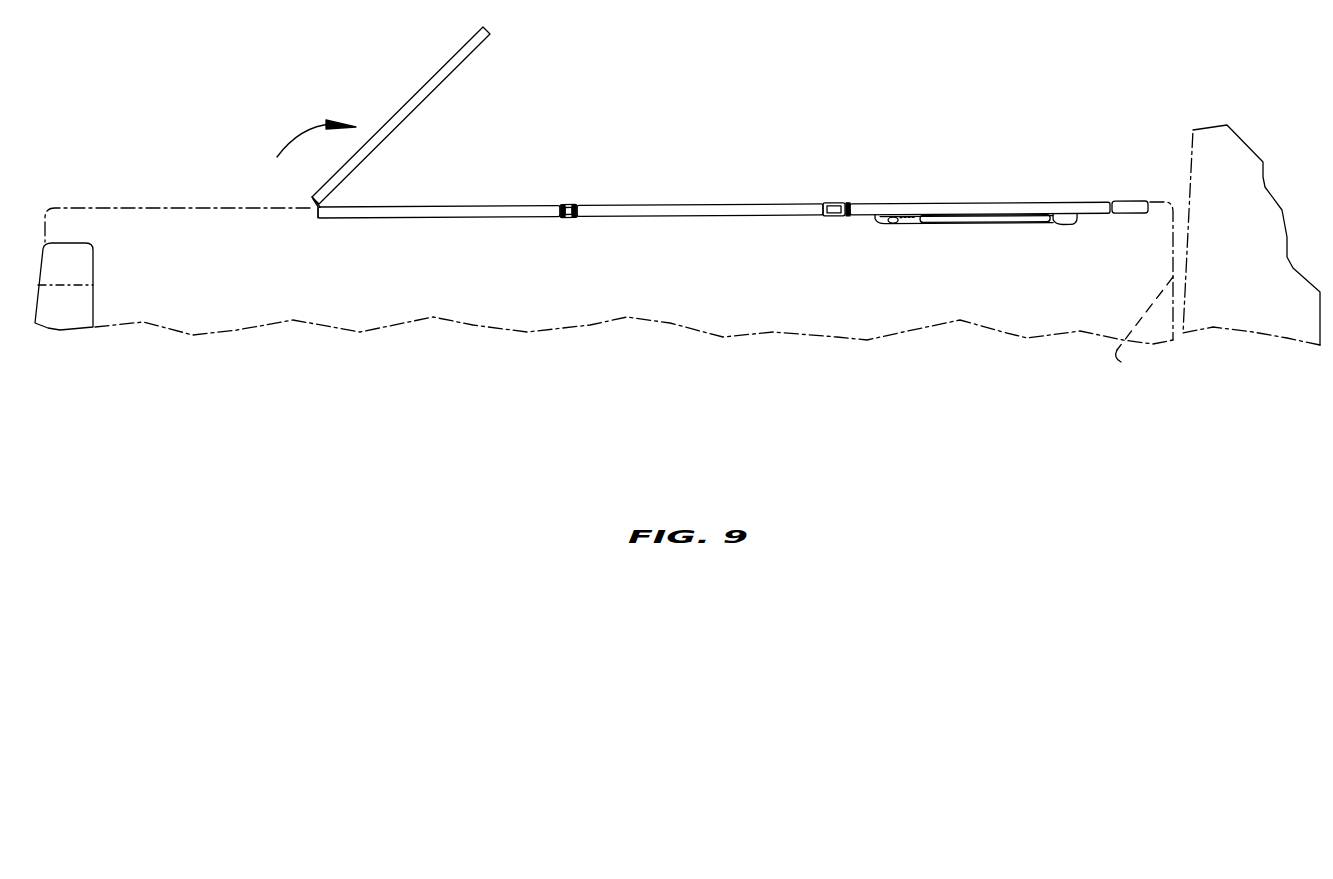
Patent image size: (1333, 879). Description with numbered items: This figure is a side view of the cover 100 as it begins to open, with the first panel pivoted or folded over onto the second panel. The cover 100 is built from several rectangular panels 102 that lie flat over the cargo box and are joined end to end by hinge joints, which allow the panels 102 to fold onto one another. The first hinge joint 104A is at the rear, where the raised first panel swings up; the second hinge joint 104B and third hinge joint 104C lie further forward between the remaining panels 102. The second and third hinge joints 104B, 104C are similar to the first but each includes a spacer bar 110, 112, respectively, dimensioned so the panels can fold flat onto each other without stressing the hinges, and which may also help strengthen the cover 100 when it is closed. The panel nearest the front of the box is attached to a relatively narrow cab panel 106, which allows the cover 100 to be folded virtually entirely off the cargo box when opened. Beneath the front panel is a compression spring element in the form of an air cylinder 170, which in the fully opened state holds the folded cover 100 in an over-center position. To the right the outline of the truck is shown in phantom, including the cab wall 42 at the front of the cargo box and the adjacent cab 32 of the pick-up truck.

The cover 100 is at (752, 199).
The panels 102 is at (437, 207).
The first hinge joint 104A is at (313, 209).
The second hinge joint 104B is at (567, 207).
The third hinge joint 104C is at (838, 205).
The cab panel 106 is at (1125, 202).
The spacer bar 110 is at (562, 218).
The spacer bar 112 is at (829, 217).
The air cylinder 170 is at (960, 225).
The cab 32 is at (1215, 140).
The cab wall 42 is at (1130, 366).